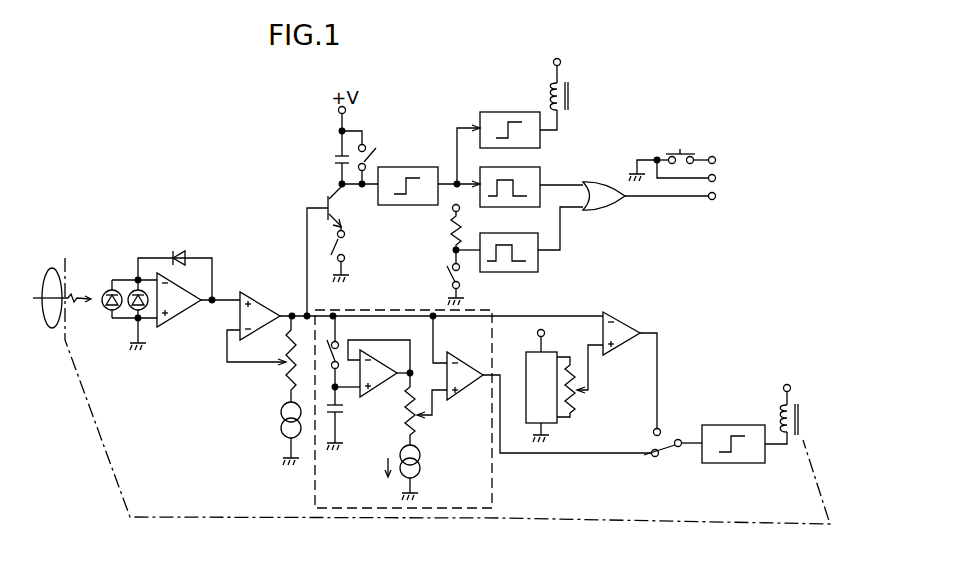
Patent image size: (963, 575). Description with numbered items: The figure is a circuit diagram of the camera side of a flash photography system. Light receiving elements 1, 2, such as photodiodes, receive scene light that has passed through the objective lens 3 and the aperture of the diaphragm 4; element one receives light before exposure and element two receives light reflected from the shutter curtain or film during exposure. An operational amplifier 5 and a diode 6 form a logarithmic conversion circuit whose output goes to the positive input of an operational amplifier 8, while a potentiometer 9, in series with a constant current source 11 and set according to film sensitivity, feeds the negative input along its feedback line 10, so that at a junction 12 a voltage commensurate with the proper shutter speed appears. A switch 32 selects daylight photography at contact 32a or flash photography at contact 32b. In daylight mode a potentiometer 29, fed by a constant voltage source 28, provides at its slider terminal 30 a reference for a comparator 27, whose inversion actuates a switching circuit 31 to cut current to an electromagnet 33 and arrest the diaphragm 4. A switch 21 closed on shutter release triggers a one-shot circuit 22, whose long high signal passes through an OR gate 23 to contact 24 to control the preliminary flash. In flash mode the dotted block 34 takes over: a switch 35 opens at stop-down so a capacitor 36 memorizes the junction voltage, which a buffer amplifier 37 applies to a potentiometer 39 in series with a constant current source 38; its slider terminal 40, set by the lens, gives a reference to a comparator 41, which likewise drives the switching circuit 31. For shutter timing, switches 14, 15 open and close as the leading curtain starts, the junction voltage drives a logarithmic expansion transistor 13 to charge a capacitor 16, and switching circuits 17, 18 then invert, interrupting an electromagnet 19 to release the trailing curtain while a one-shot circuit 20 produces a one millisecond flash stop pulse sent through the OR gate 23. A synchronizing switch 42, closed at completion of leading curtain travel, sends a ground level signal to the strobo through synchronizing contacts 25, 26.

The light receiving element 1 is at (104, 311).
The light receiving element 2 is at (128, 312).
The objective lens 3 is at (48, 326).
The diaphragm 4 is at (66, 343).
The operational amplifier 5 is at (176, 317).
The diode 6 is at (192, 242).
The operational amplifier 8 is at (262, 298).
The potentiometer 9 is at (286, 377).
The feedback line 10 is at (241, 363).
The constant current source 11 is at (280, 420).
The junction 12 is at (290, 312).
The logarithmic expansion transistor 13 is at (327, 200).
The switch 14 is at (370, 160).
The switch 15 is at (346, 246).
The capacitor 16 is at (337, 157).
The switching circuit 17 is at (425, 166).
The switching circuit 18 is at (510, 112).
The electromagnet 19 is at (571, 95).
The one-shot circuit 20 is at (544, 168).
The switch 21 is at (447, 274).
The one-shot circuit 22 is at (524, 273).
The OR gate 23 is at (600, 180).
The contact 24 is at (716, 199).
The synchronizing contact 25 is at (716, 178).
The synchronizing contact 26 is at (716, 160).
The comparator 27 is at (626, 318).
The constant voltage source 28 is at (526, 398).
The potentiometer 29 is at (576, 395).
The slider terminal 30 is at (592, 370).
The switching circuit 31 is at (736, 464).
The switch 32 is at (668, 452).
The contact 32a is at (661, 430).
The contact 32b is at (653, 458).
The electromagnet 33 is at (800, 404).
The dotted block 34 is at (314, 485).
The switch 35 is at (327, 356).
The capacitor 36 is at (342, 416).
The buffer amplifier 37 is at (384, 388).
The constant current source 38 is at (420, 466).
The potentiometer 39 is at (415, 425).
The slider terminal 40 is at (440, 398).
The comparator 41 is at (472, 353).
The synchronizing switch 42 is at (680, 149).